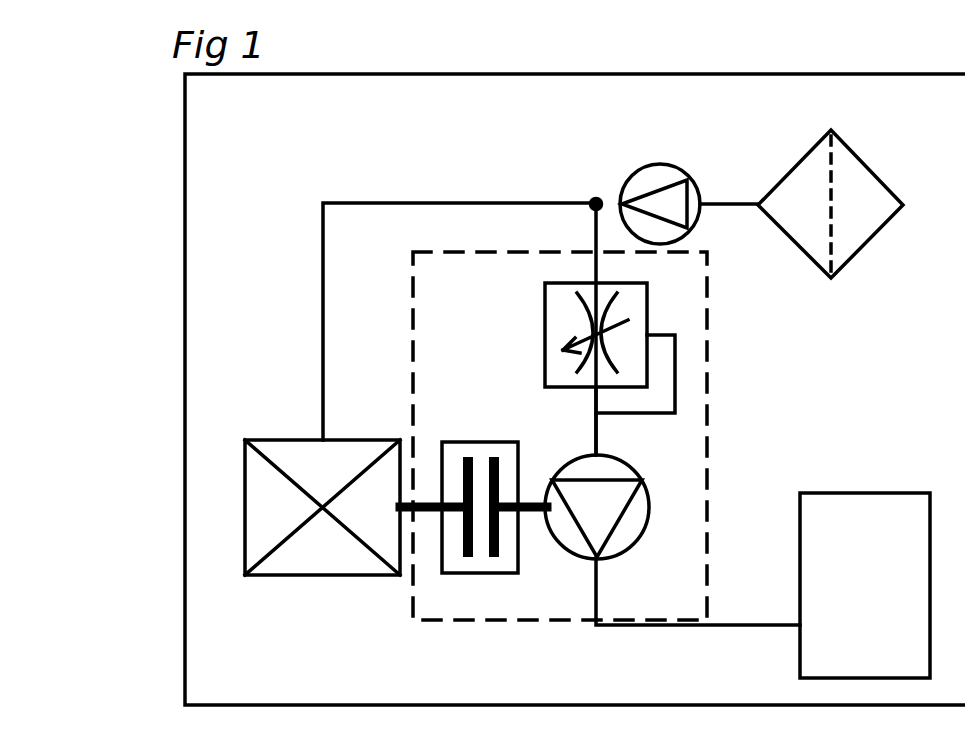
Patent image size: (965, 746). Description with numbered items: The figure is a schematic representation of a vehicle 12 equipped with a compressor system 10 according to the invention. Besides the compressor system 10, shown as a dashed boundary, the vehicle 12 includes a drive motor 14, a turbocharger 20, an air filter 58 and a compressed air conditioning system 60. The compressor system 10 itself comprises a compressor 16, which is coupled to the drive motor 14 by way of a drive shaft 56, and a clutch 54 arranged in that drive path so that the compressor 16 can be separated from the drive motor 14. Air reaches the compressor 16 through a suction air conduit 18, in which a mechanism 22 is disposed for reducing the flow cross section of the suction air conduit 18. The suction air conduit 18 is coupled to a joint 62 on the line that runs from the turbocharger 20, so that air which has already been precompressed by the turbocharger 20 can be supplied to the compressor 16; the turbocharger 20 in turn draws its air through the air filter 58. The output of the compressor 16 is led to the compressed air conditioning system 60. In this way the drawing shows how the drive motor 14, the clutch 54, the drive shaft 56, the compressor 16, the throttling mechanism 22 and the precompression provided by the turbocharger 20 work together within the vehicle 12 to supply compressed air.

The compressor system 10 is at (708, 330).
The vehicle 12 is at (752, 706).
The drive motor 14 is at (280, 575).
The compressor 16 is at (644, 532).
The suction air conduit 18 is at (586, 432).
The turbocharger 20 is at (654, 170).
The mechanism for reducing the flow cross section 22 is at (545, 317).
The clutch 54 is at (478, 573).
The drive shaft 56 is at (527, 513).
The air filter 58 is at (872, 240).
The compressed air conditioning system 60 is at (876, 590).
The joint 62 is at (592, 197).